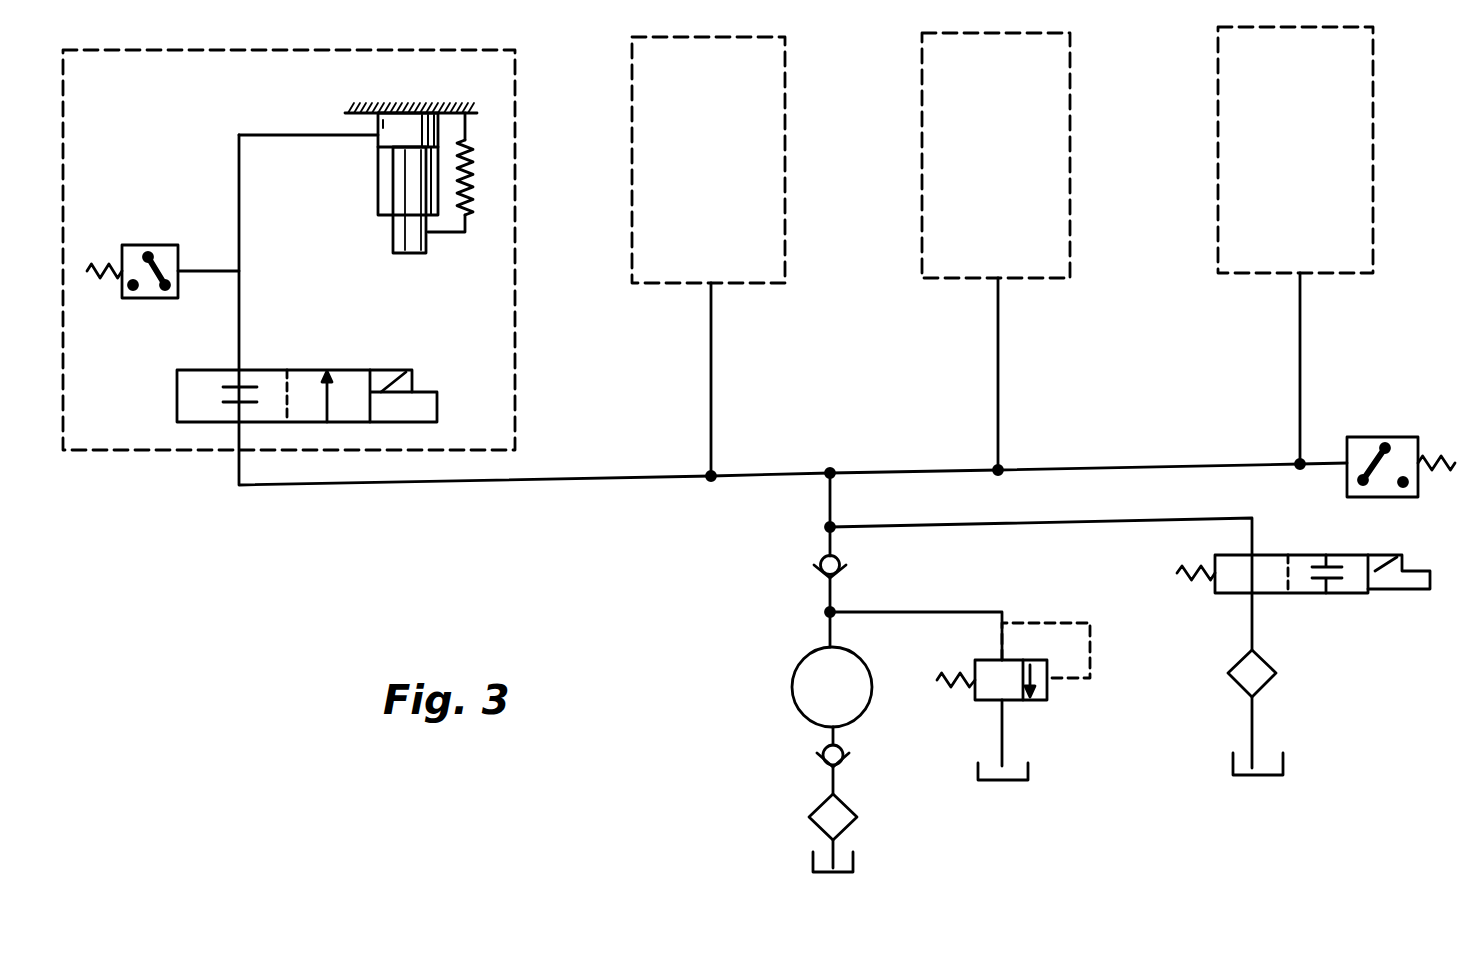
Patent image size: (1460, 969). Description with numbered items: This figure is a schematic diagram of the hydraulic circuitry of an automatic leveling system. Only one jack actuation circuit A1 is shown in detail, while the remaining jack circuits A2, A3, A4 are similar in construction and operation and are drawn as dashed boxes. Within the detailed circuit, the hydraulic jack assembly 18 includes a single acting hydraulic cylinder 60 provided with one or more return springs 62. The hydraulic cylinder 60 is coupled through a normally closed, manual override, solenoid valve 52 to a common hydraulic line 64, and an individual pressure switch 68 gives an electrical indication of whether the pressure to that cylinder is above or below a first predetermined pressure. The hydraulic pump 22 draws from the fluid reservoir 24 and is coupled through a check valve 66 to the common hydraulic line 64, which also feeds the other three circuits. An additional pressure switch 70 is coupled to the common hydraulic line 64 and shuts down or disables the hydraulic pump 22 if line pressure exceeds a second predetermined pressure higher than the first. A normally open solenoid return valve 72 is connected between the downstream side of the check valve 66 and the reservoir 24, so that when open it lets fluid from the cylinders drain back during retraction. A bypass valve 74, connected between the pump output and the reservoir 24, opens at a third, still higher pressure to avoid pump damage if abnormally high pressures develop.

The hydraulic jack assembly 18 is at (362, 175).
The hydraulic cylinder 60 is at (393, 238).
The return spring 62 is at (473, 180).
The pressure switch 68 is at (160, 245).
The solenoid valve 52 is at (280, 368).
The common hydraulic line 64 is at (595, 478).
The check valve 66 is at (823, 582).
The hydraulic pump 22 is at (792, 673).
The fluid reservoir 24 is at (855, 857).
The pressure switch 70 is at (1345, 495).
The solenoid return valve 72 is at (1352, 568).
The bypass valve 74 is at (1048, 705).
The jack actuation circuit A1 is at (517, 412).
The jack circuit A2 is at (770, 283).
The jack circuit A3 is at (1047, 278).
The jack circuit A4 is at (1360, 273).